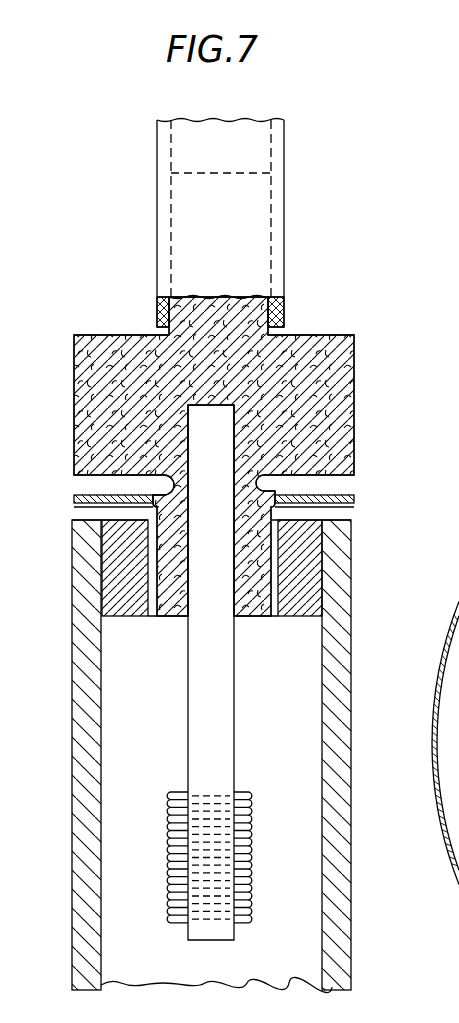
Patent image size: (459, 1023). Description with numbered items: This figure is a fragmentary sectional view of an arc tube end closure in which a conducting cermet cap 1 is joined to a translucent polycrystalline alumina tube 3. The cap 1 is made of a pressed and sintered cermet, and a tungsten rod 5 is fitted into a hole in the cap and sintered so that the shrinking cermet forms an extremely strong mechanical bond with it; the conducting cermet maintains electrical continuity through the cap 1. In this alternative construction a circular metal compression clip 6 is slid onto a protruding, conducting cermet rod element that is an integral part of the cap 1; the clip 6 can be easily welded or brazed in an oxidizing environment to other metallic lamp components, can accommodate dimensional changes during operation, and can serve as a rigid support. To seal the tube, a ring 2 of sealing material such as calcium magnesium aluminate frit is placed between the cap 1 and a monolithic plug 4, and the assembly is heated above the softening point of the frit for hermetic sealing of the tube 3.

The cap 1 is at (74, 345).
The ring of sealing material 2 is at (74, 497).
The translucent polycrystalline alumina tube 3 is at (72, 707).
The monolithic plug 4 is at (133, 617).
The tungsten rod 5 is at (195, 707).
The circular metal compression clip 6 is at (157, 235).